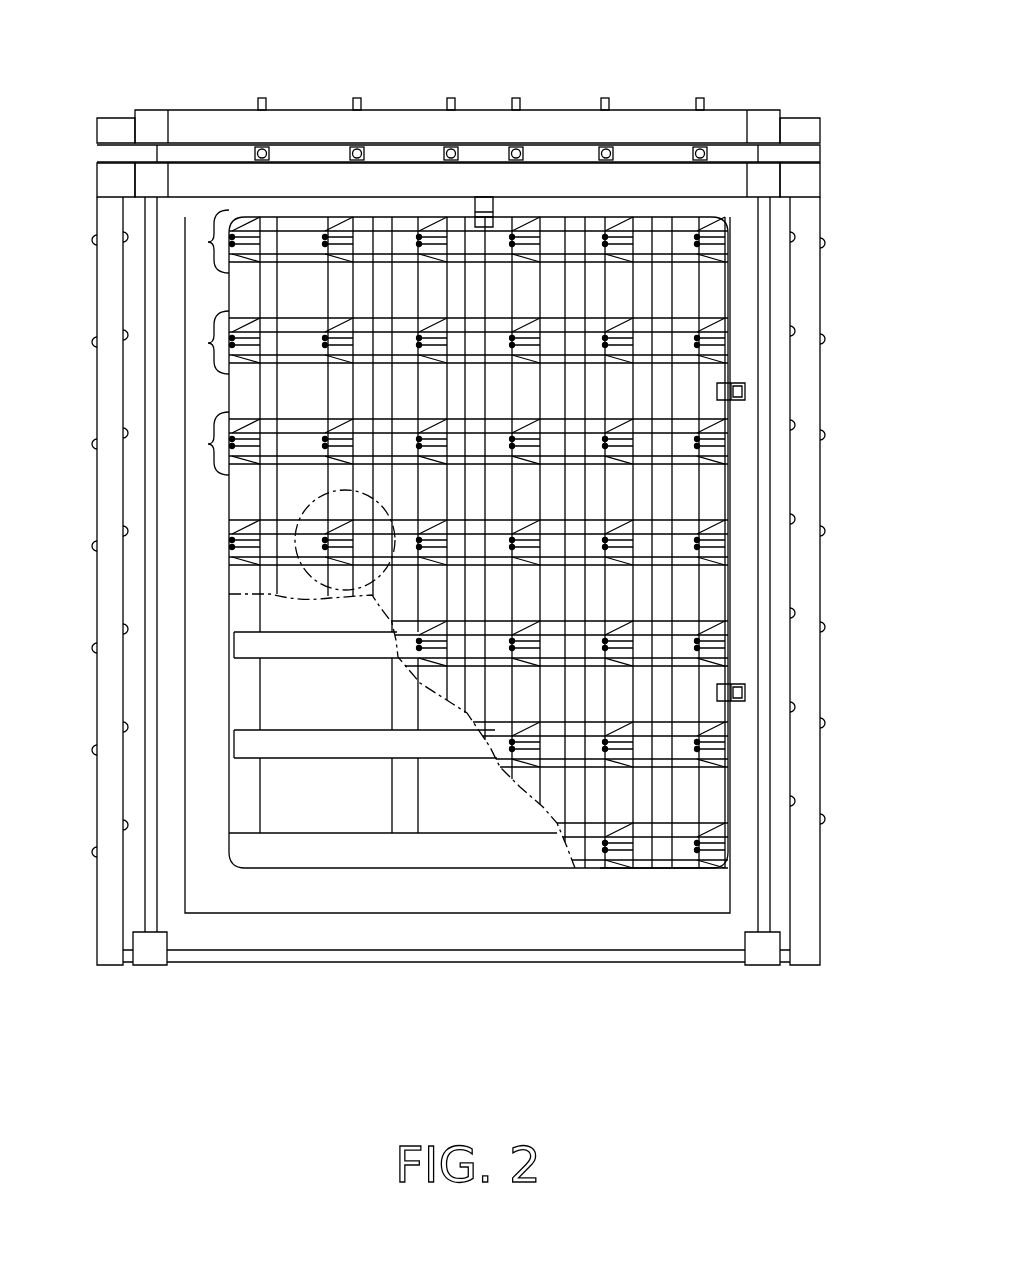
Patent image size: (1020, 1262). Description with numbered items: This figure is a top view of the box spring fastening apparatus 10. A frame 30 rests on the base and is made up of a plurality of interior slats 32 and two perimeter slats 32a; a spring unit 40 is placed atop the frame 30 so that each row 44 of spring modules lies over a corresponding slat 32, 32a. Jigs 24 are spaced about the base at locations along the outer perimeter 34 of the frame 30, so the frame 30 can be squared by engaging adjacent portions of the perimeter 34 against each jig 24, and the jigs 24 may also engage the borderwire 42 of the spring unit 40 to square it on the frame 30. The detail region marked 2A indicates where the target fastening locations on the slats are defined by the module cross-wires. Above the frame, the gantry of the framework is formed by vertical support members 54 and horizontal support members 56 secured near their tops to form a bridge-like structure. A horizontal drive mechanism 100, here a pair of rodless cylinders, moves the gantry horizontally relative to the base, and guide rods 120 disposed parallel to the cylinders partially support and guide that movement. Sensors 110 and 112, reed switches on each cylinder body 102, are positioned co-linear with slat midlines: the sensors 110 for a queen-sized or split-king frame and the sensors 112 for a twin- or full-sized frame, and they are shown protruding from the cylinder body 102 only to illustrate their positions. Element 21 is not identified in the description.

The box spring fastening apparatus 10 is at (136, 57).
The clip 21 is at (486, 197).
The jig 24 is at (746, 392).
The detail circle 2A is at (298, 505).
The frame 30 is at (460, 488).
The interior slat 32 is at (292, 742).
The perimeter slat 32a is at (662, 235).
The outer perimeter 34 is at (551, 215).
The spring unit 40 is at (600, 870).
The borderwire 42 is at (656, 871).
The row 44 is at (208, 342).
The vertical support member 54 is at (155, 120).
The horizontal support member 56 is at (395, 141).
The horizontal drive mechanism 100 is at (465, 564).
The cylinder body 102 is at (464, 541).
The sensor 110 is at (823, 244).
The sensor 112 is at (793, 237).
The guide rod 120 is at (147, 912).